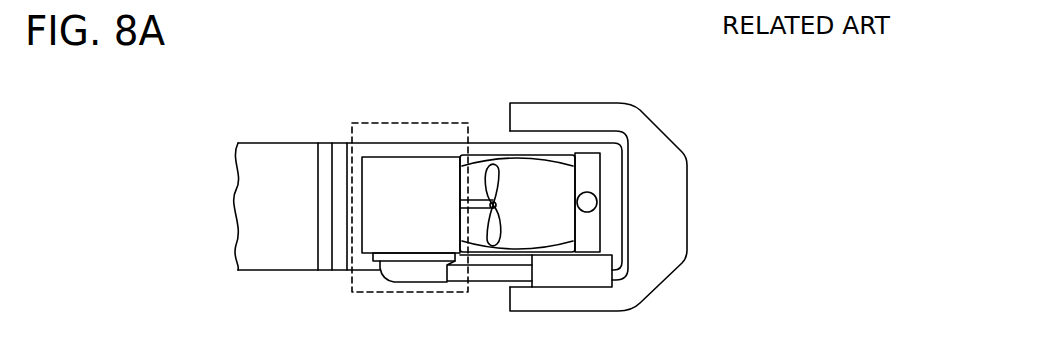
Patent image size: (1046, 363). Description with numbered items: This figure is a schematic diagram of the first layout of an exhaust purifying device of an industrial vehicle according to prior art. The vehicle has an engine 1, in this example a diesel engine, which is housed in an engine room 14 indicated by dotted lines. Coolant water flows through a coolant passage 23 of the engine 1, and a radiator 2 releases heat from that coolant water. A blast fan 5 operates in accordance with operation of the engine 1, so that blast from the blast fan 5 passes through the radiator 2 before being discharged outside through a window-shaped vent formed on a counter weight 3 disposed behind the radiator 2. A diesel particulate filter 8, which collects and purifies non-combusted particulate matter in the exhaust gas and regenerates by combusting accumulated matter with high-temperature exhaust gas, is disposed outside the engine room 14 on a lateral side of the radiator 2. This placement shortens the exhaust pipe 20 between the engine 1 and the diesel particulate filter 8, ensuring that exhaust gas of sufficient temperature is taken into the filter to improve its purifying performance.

The engine 1 is at (405, 150).
The radiator 2 is at (590, 150).
The counter weight 3 is at (532, 103).
The blast fan 5 is at (498, 203).
The diesel particulate filter (DPF) 8 is at (578, 288).
The engine room 14 is at (441, 123).
The exhaust pipe 20 is at (487, 283).
The coolant passage 23 is at (500, 152).